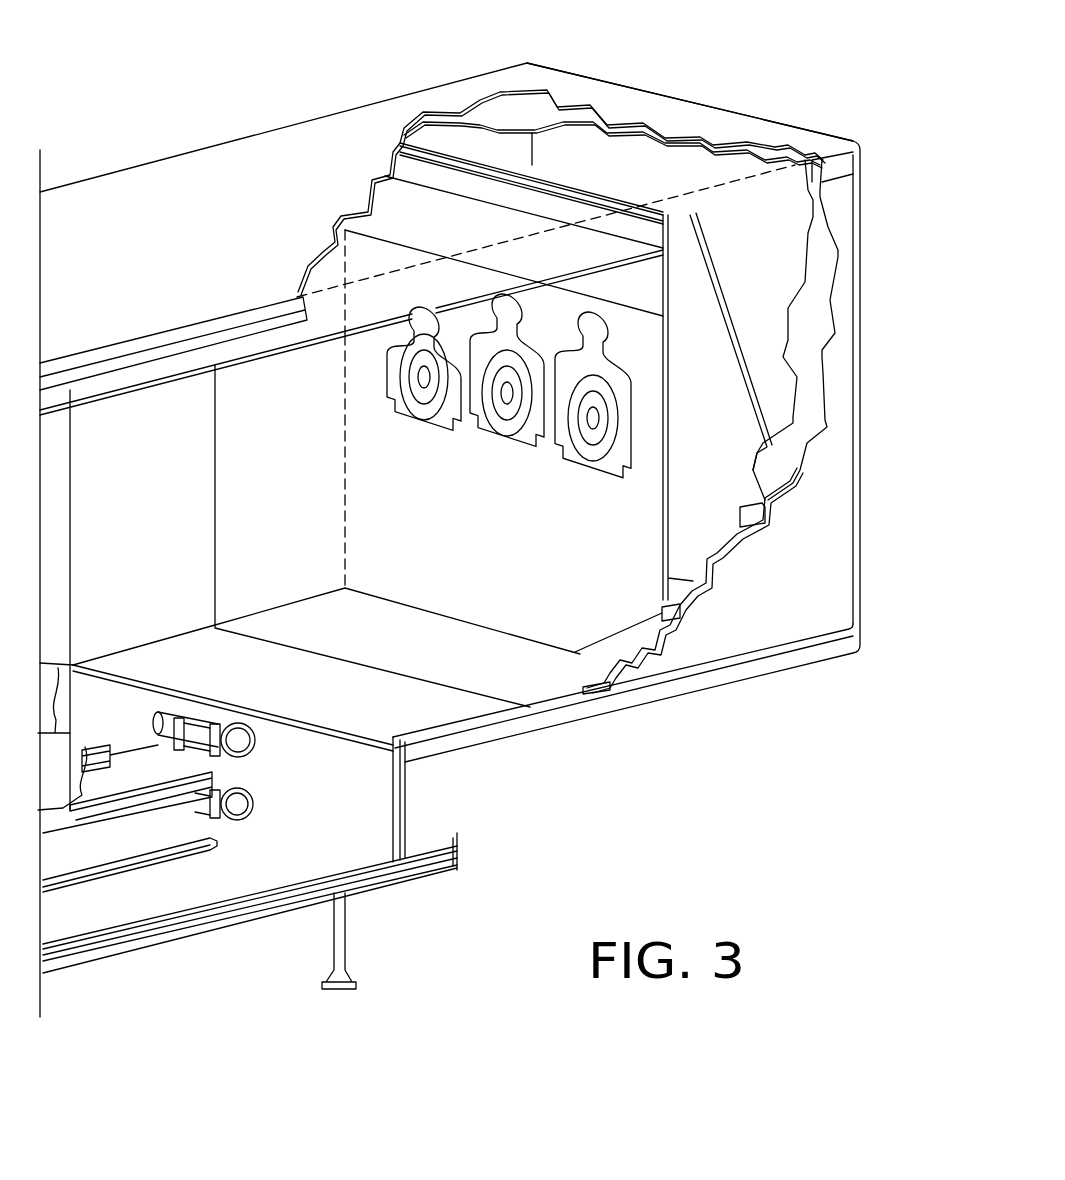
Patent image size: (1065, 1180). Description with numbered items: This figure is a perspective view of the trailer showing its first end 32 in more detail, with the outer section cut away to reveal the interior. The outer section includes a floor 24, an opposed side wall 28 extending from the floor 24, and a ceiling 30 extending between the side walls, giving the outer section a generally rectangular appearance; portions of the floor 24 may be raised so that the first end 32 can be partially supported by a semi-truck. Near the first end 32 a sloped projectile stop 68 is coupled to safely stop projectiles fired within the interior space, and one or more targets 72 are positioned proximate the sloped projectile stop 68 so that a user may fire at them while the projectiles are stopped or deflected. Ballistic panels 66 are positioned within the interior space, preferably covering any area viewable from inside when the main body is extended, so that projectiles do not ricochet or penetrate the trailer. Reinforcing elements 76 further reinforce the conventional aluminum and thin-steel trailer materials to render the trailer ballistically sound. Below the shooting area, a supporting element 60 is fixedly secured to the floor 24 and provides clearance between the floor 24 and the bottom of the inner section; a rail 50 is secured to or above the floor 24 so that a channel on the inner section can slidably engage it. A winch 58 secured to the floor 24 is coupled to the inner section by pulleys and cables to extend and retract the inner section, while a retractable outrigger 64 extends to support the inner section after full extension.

The floor 24 is at (47, 932).
The side wall 28 is at (827, 445).
The ceiling 30 is at (652, 100).
The first end 32 is at (862, 232).
The rail 50 is at (117, 805).
The winch 58 is at (252, 742).
The supporting element 60 is at (77, 853).
The retractable outrigger 64 is at (343, 947).
The ballistic panel 66 is at (330, 340).
The sloped projectile stop 68 is at (742, 378).
The target 72 is at (580, 448).
The reinforcing element 76 is at (498, 113).